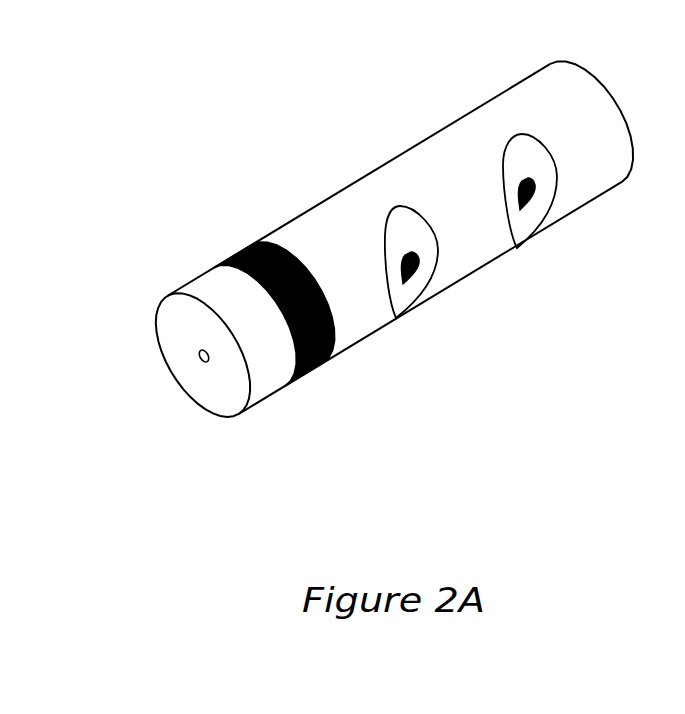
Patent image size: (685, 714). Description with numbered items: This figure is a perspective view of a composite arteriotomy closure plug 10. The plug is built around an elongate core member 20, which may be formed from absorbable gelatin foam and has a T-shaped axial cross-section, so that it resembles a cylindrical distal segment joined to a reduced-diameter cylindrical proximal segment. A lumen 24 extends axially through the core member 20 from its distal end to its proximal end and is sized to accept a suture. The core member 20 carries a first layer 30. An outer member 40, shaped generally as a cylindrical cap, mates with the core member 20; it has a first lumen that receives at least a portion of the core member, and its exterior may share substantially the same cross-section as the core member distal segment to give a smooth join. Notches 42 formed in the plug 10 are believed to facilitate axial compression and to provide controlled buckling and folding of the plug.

The composite arteriotomy closure plug 10 is at (320, 102).
The elongate core member 20 is at (215, 400).
The lumen 24 is at (198, 357).
The first layer 30 is at (243, 250).
The outer member 40 is at (543, 98).
The notches 42 is at (414, 296).